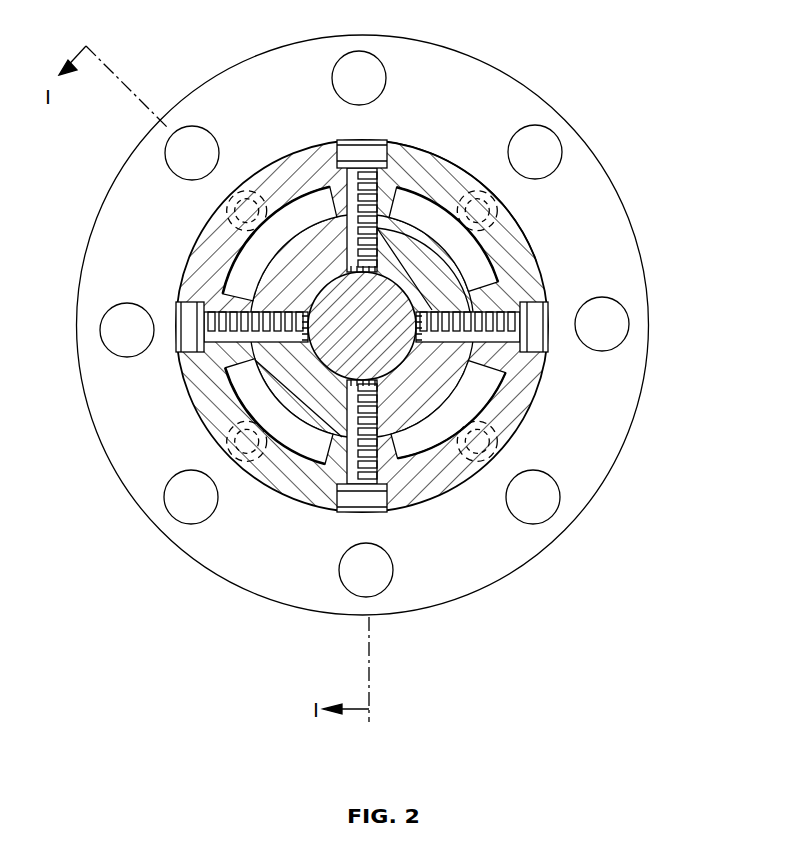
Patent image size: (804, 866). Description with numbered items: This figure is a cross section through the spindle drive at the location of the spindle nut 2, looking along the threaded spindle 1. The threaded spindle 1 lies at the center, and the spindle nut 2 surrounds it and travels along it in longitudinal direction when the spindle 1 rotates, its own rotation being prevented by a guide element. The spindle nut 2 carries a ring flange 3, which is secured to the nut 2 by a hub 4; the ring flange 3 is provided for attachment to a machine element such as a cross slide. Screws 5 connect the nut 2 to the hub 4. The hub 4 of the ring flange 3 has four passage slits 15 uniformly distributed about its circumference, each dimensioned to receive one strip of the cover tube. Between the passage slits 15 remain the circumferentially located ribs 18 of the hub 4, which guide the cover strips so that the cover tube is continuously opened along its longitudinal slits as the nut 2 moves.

The threaded spindle 1 is at (472, 362).
The spindle nut 2 is at (440, 270).
The ring flange 3 is at (518, 545).
The hub 4 is at (430, 165).
The screws 5 is at (345, 152).
The passage slits 15 is at (428, 210).
The ribs 18 is at (392, 160).